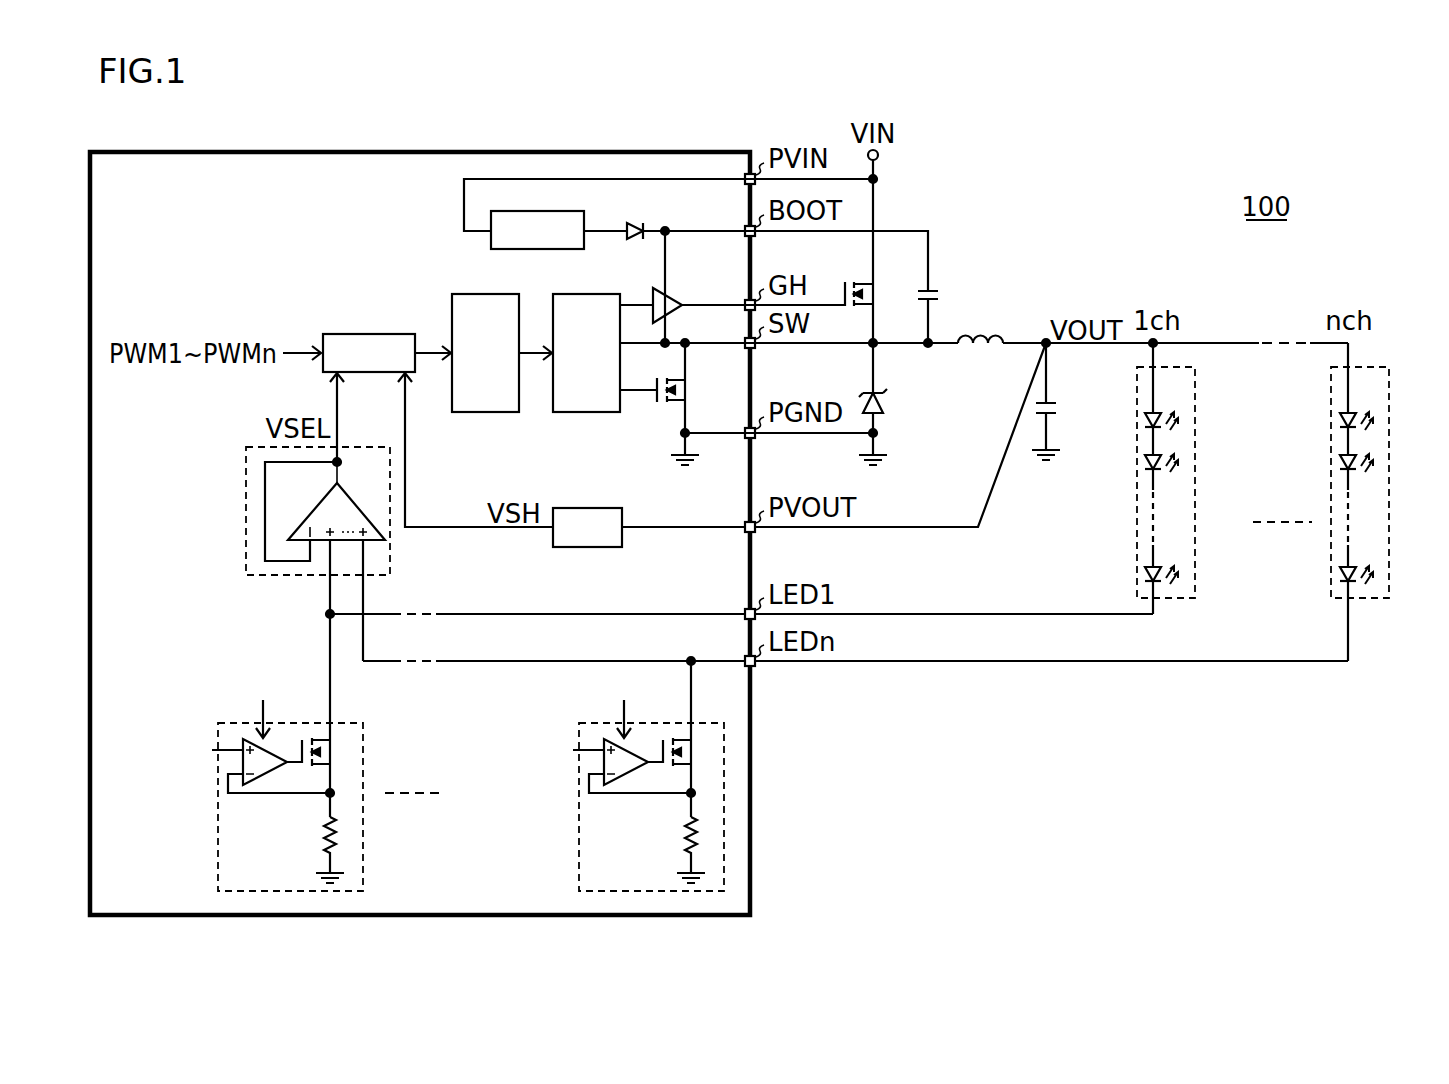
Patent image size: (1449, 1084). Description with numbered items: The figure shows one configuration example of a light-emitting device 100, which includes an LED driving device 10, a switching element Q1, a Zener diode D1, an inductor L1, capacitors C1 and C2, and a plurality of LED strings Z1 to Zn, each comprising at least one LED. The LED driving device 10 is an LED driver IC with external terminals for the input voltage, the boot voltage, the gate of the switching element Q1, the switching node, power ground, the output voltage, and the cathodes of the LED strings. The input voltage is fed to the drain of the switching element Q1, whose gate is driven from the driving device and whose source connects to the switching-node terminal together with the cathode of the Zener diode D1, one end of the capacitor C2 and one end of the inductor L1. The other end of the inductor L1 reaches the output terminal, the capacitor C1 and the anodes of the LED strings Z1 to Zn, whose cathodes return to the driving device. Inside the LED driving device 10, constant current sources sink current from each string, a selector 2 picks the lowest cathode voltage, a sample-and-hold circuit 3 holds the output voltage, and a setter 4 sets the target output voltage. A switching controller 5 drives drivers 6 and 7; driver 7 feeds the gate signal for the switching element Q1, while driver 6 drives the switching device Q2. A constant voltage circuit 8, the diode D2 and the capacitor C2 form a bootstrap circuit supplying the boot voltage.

The LED driving device 10 is at (420, 152).
The light-emitting device 100 is at (1266, 207).
The selector 2 is at (246, 510).
The sample-and-hold circuit 3 is at (590, 509).
The setter 4 is at (370, 334).
The switching controller 5 is at (486, 294).
The driver 6 is at (586, 294).
The driver 7 is at (677, 284).
The constant voltage circuit 8 is at (584, 224).
The switching element Q1 is at (877, 292).
The switching device Q2 is at (692, 392).
The Zener diode D1 is at (884, 400).
The diode D2 is at (635, 222).
The capacitor C1 is at (1057, 408).
The capacitor C2 is at (938, 297).
The inductor L1 is at (982, 336).
The LED string Z1 is at (1196, 387).
The LED string Zn is at (1390, 387).